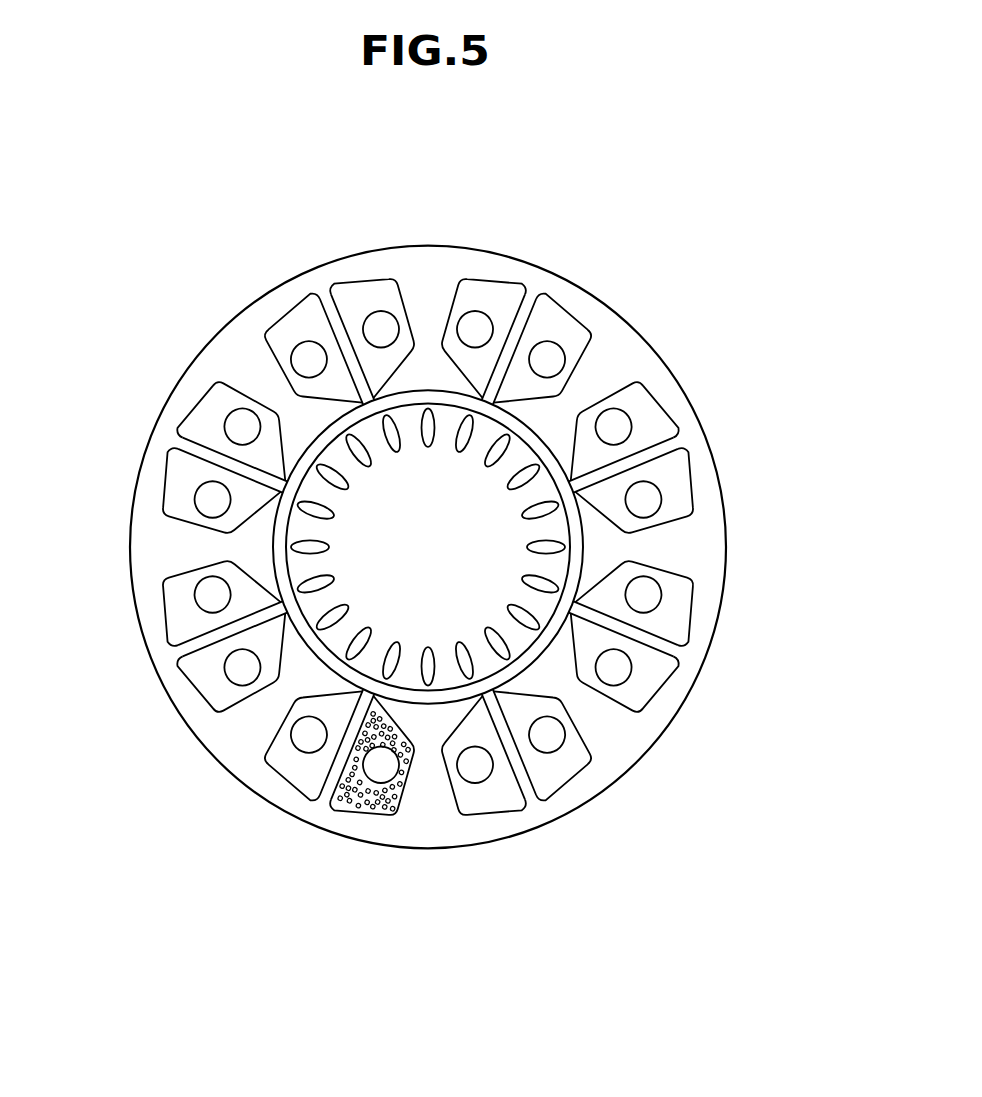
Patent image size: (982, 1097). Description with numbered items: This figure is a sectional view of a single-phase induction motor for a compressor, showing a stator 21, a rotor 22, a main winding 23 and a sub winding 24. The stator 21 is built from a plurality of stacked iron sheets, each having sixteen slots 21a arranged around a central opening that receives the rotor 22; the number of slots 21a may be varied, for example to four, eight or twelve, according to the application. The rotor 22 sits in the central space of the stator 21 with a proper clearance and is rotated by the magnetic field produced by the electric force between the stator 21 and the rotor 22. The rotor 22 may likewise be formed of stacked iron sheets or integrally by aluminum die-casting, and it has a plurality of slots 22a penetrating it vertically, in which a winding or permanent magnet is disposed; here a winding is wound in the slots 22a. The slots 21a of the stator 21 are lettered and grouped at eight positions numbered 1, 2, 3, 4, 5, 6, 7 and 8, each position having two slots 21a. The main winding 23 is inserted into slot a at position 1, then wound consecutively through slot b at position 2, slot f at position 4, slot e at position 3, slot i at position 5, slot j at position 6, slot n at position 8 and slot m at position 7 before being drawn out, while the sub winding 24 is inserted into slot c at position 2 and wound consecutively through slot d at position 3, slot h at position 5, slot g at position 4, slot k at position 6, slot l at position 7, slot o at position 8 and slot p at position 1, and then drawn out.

The stator 21 is at (659, 333).
The slots 21a is at (210, 403).
The rotor 22 is at (505, 557).
The slots 22a is at (333, 475).
The main winding 23 is at (480, 290).
The sub winding 24 is at (570, 330).
The slot group 1 is at (347, 349).
The slot group 2 is at (509, 349).
The slot group 3 is at (623, 465).
The slot group 4 is at (623, 629).
The slot group 5 is at (509, 744).
The slot group 6 is at (347, 744).
The slot group 7 is at (232, 629).
The slot group 8 is at (232, 465).